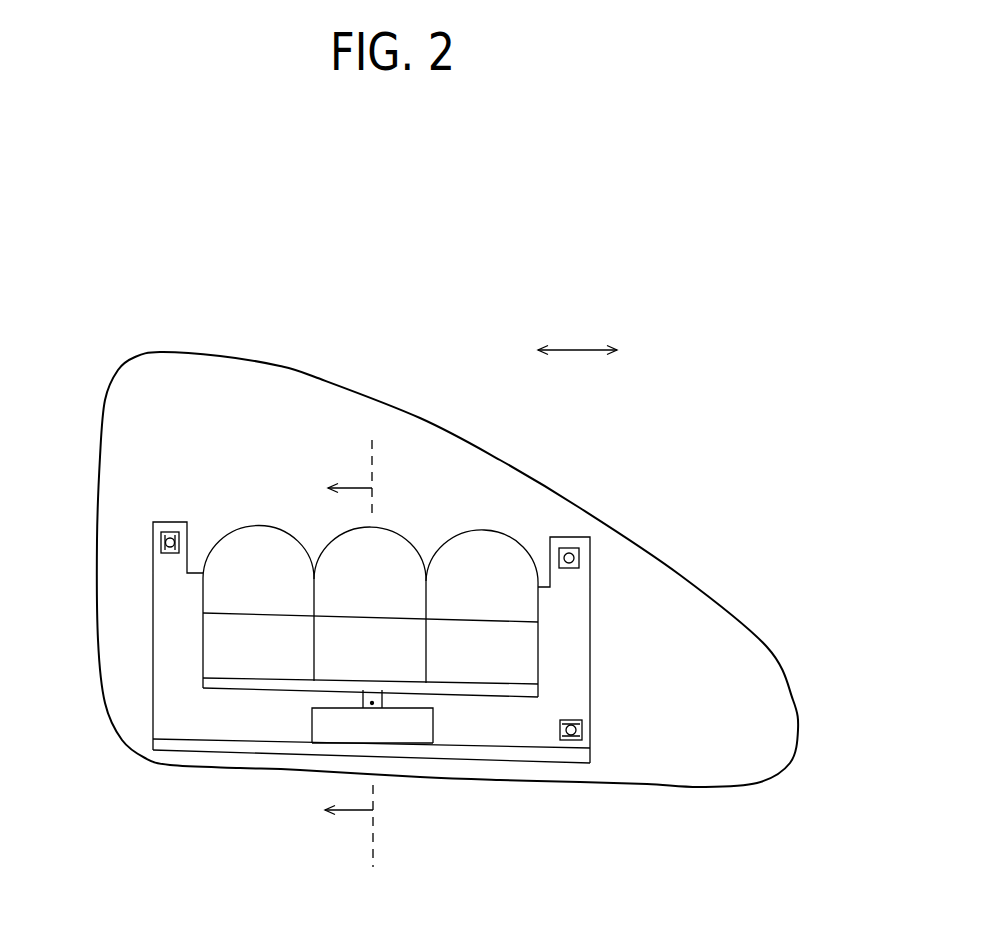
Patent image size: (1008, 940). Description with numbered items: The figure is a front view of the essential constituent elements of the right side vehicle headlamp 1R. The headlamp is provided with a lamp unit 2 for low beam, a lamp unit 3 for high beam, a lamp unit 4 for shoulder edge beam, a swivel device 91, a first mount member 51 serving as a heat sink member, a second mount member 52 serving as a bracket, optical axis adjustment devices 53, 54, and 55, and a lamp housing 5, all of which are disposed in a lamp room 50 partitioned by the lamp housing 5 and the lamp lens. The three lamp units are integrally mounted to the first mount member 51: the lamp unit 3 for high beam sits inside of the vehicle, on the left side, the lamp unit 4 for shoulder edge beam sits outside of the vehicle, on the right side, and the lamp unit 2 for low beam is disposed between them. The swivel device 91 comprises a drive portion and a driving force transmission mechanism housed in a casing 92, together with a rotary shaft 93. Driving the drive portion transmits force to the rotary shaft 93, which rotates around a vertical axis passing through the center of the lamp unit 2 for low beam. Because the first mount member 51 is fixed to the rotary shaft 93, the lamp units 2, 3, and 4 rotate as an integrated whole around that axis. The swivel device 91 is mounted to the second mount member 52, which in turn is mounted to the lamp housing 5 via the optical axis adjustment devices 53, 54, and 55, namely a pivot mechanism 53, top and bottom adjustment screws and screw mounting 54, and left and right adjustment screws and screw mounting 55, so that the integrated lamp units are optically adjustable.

The vehicle headlamp 1R is at (315, 377).
The lamp housing 5 is at (418, 418).
The lamp room 50 is at (185, 383).
The second mount member 52 is at (240, 753).
The first mount member 51 is at (230, 688).
The lamp unit for shoulder edge beam 4 is at (242, 523).
The lamp unit for low beam 2 is at (392, 528).
The lamp unit for high beam 3 is at (463, 528).
The optical axis adjustment device 53 is at (572, 546).
The optical axis adjustment device 54 is at (575, 720).
The optical axis adjustment device 55 is at (168, 530).
The swivel device 91 is at (367, 737).
The casing 92 is at (423, 725).
The rotary shaft 93 is at (372, 703).